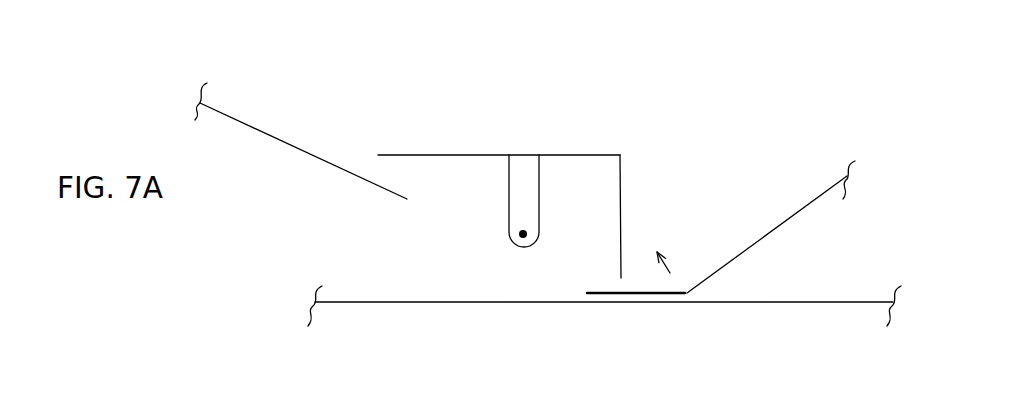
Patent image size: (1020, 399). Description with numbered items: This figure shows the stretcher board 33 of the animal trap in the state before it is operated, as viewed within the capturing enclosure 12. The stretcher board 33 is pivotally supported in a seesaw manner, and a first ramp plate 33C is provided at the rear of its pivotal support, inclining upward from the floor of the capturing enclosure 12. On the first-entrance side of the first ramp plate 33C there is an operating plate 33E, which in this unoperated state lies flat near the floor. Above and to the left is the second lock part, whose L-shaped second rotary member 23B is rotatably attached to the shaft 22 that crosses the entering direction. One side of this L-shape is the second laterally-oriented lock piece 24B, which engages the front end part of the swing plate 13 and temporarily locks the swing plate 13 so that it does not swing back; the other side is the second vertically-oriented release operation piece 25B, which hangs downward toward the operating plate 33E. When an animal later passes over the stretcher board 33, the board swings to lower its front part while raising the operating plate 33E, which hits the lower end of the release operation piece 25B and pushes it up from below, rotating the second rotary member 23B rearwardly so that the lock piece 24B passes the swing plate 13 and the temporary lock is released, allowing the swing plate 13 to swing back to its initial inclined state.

The capturing enclosure 12 is at (542, 305).
The swing plate 13 is at (272, 133).
The shaft 22 is at (523, 237).
The second rotary member 23B is at (577, 48).
The second laterally-oriented lock piece 24B is at (595, 153).
The second vertically-oriented release operation piece 25B is at (622, 200).
The stretcher board 33 is at (755, 240).
The first ramp plate 33C is at (802, 210).
The operating plate 33E is at (648, 295).